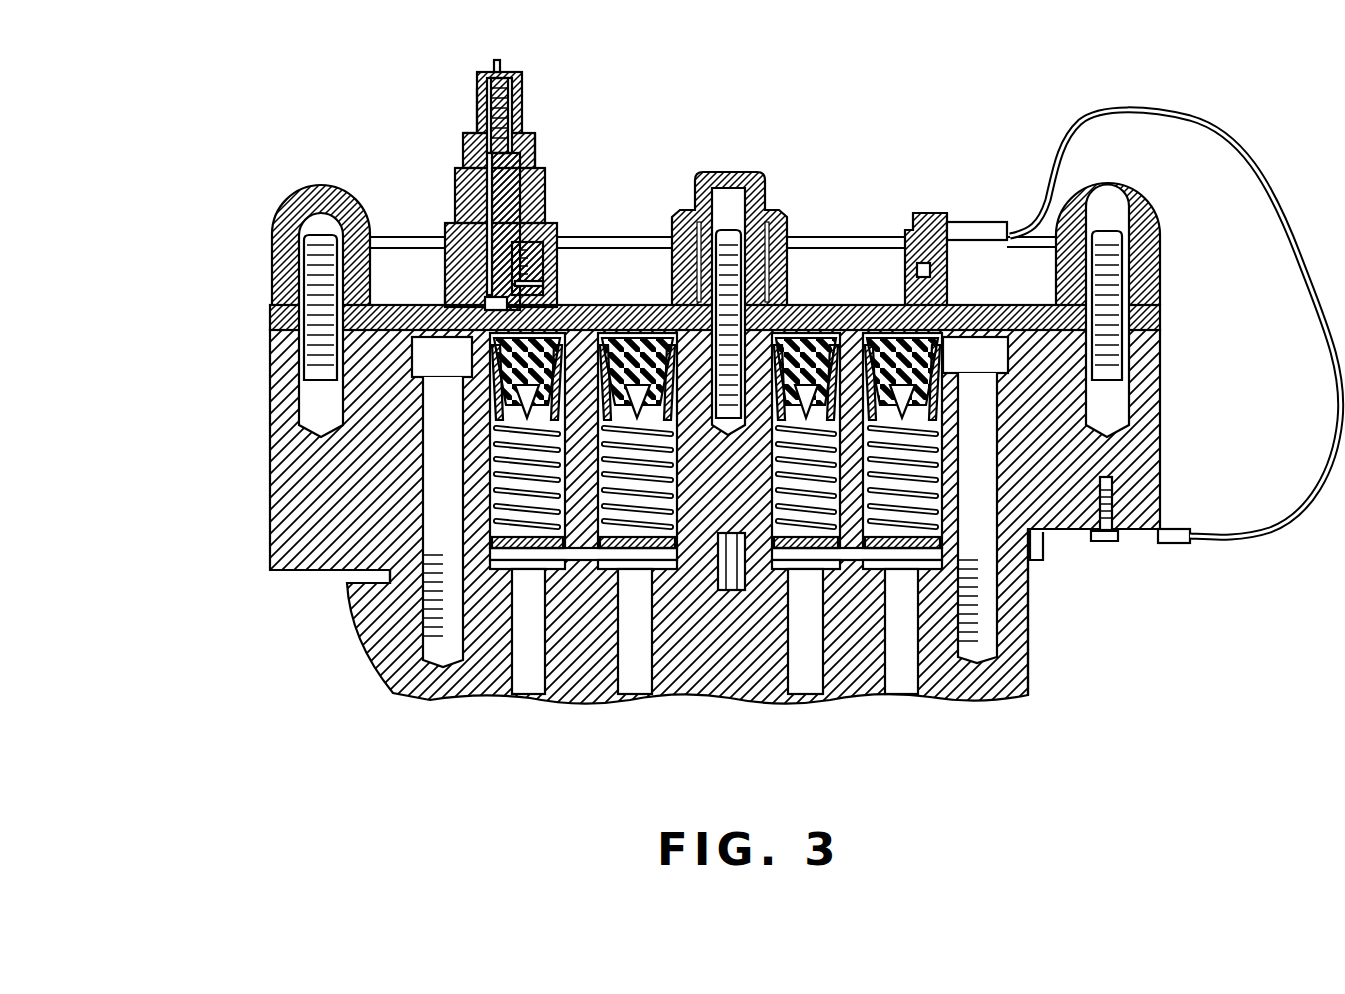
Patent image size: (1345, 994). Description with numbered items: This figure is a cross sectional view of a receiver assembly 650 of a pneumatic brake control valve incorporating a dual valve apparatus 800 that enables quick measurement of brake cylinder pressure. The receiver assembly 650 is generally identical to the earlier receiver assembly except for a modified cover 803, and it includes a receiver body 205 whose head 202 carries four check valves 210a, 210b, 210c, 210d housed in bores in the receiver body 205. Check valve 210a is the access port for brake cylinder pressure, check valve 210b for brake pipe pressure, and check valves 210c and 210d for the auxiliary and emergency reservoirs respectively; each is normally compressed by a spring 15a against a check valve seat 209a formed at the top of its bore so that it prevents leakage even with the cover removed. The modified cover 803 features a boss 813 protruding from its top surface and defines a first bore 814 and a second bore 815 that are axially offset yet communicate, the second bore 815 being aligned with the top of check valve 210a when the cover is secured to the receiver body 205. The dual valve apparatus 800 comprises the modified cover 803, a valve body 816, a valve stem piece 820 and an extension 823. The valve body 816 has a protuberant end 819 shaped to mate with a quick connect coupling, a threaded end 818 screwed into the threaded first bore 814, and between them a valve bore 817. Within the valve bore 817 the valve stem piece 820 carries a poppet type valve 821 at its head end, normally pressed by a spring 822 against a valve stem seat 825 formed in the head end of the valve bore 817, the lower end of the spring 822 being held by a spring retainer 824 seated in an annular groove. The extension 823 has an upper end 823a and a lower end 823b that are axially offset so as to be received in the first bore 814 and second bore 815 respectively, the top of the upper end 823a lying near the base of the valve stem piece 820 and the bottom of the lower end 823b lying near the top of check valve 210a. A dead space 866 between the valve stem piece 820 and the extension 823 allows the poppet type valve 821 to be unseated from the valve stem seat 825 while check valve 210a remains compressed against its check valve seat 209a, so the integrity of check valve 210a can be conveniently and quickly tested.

The dual valve apparatus 800 is at (429, 159).
The valve stem seat 825 is at (493, 62).
The poppet type valve 821 is at (502, 70).
The valve stem piece 820 is at (518, 83).
The protuberant end 819 is at (478, 86).
The spring 822 is at (517, 110).
The dead space 866 is at (477, 140).
The spring retainer 824 is at (535, 133).
The valve bore 817 is at (487, 158).
The extension 823 is at (542, 167).
The valve body 816 is at (455, 193).
The boss 813 is at (445, 230).
The threaded end 818 is at (522, 240).
The upper end 823a is at (520, 250).
The first bore 814 is at (455, 288).
The second bore 815 is at (485, 303).
The lower end 823b is at (547, 291).
The check valve 210b is at (640, 305).
The check valve 210c is at (807, 318).
The check valve 210d is at (970, 318).
The check valve 210a is at (507, 517).
The check valve seat 209a is at (497, 405).
The modified cover 803 is at (273, 262).
The head 202 is at (270, 310).
The receiver assembly 650 is at (733, 407).
The receiver body 205 is at (277, 432).
The spring 15a is at (390, 570).